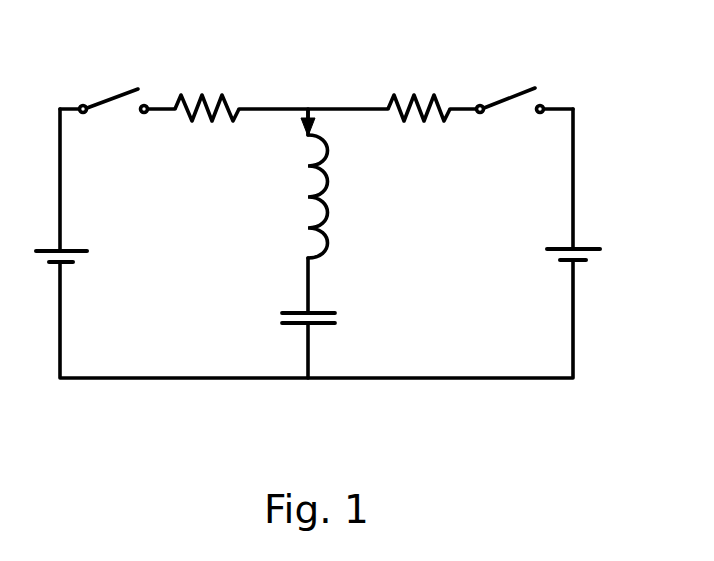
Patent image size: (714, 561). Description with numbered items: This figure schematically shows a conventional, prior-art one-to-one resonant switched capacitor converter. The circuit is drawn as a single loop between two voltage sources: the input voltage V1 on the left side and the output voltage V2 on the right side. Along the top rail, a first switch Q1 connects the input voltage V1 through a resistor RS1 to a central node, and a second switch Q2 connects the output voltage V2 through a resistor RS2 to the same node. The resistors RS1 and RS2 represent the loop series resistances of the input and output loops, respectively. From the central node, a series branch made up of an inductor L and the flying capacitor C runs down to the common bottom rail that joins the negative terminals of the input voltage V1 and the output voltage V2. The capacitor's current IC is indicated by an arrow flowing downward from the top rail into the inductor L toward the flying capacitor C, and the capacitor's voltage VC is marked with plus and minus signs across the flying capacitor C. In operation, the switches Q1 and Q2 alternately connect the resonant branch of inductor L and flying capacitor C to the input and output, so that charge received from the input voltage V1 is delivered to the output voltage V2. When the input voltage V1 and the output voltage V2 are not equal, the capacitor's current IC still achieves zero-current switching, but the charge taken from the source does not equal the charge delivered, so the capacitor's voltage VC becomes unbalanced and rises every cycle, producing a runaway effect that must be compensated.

The switch Q1 is at (114, 118).
The switch Q2 is at (510, 118).
The resistor RS1 is at (207, 124).
The resistor RS2 is at (419, 124).
The inductor L is at (300, 196).
The flying capacitor C is at (304, 295).
The capacitor's current IC is at (320, 125).
The capacitor's voltage VC is at (354, 319).
The input voltage V1 is at (73, 235).
The output voltage V2 is at (562, 229).